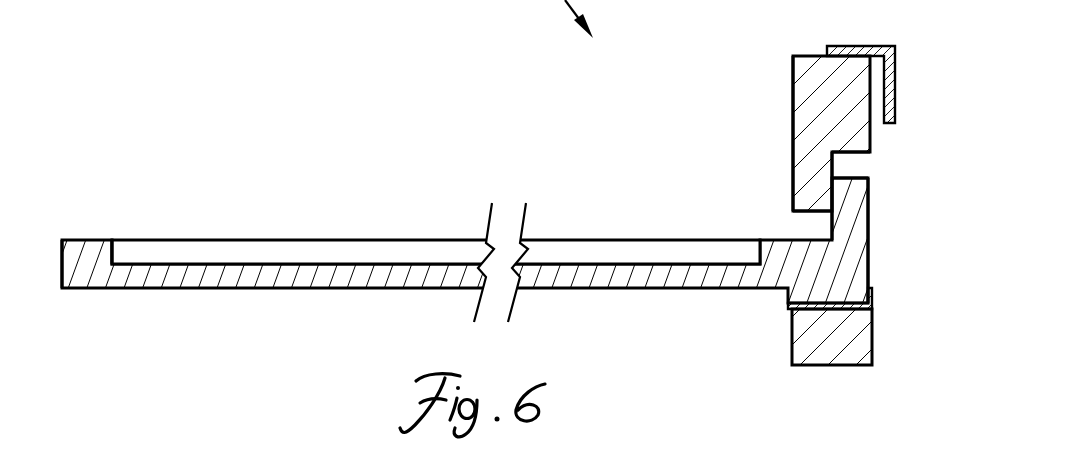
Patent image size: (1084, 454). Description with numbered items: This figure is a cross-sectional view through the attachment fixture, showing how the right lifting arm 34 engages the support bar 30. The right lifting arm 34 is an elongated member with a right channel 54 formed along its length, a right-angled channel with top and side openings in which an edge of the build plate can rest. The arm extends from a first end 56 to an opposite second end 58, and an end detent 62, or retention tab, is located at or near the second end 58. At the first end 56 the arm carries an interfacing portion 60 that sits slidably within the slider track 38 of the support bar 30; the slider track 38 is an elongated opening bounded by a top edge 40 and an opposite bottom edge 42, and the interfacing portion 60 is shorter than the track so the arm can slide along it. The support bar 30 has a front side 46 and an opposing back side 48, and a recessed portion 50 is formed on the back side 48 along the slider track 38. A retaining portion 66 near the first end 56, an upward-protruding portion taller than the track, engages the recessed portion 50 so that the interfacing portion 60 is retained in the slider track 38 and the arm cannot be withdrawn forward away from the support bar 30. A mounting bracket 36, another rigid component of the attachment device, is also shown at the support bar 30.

The support bar 30 is at (817, 110).
The right lifting arm 34 is at (295, 284).
The mounting bracket 36 is at (897, 90).
The slider track 38 is at (766, 224).
The top edge 40 is at (795, 214).
The bottom edge 42 is at (788, 290).
The front side 46 is at (793, 72).
The back side 48 is at (873, 135).
The recessed portion 50 is at (833, 165).
The right channel 54 is at (255, 250).
The first end 56 is at (868, 250).
The second end 58 is at (62, 265).
The interfacing portion 60 is at (850, 313).
The end detent 62 is at (113, 250).
The retaining portion 66 is at (848, 208).